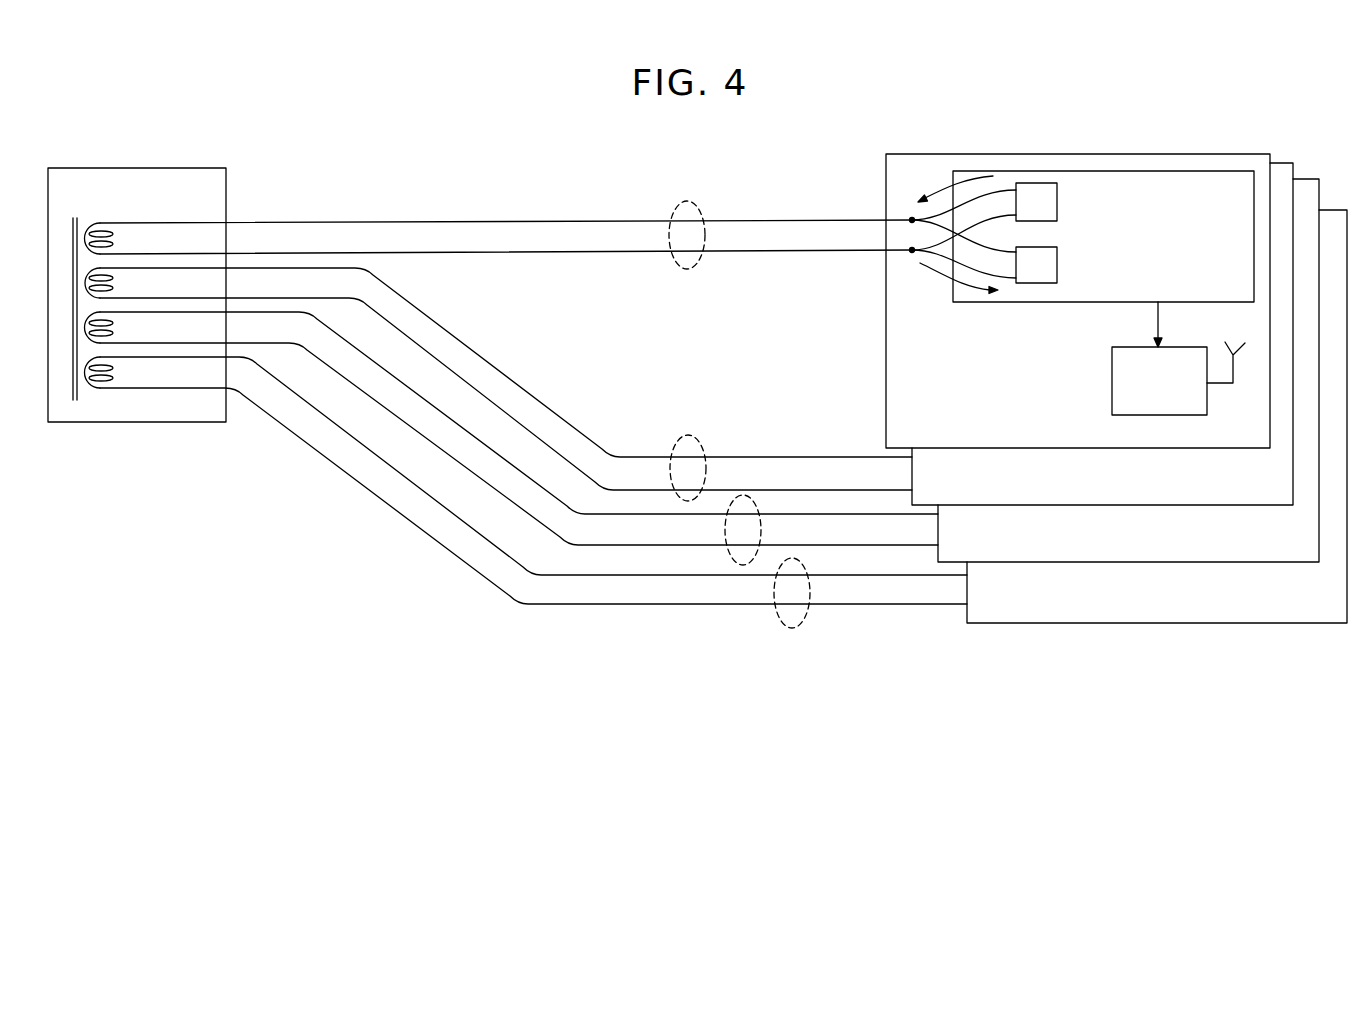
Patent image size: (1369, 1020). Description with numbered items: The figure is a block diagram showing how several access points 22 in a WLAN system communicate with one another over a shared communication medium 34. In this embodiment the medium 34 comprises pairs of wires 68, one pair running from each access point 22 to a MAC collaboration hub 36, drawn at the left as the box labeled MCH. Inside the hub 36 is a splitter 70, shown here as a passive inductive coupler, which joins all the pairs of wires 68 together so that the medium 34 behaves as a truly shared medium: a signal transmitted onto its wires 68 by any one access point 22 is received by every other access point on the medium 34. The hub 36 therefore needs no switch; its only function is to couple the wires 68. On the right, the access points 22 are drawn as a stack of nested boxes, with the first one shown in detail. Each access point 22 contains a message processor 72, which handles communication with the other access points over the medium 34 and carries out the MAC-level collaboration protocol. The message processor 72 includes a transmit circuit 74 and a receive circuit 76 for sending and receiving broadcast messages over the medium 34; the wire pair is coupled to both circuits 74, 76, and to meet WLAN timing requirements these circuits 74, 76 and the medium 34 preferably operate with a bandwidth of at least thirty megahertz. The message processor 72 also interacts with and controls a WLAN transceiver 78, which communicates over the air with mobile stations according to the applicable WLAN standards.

The MAC collaboration hub 36 is at (199, 168).
The splitter 70 is at (166, 418).
The wires 68 is at (479, 252).
The shared communication medium 34 is at (689, 201).
The access point 22 is at (886, 297).
The message processor 72 is at (960, 302).
The transmit circuit 74 is at (1057, 200).
The receive circuit 76 is at (1037, 283).
The WLAN transceiver 78 is at (1112, 385).